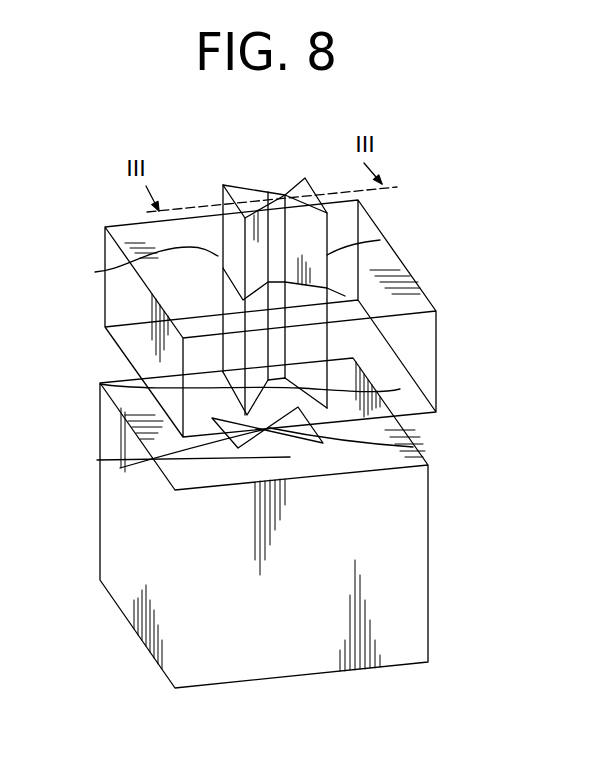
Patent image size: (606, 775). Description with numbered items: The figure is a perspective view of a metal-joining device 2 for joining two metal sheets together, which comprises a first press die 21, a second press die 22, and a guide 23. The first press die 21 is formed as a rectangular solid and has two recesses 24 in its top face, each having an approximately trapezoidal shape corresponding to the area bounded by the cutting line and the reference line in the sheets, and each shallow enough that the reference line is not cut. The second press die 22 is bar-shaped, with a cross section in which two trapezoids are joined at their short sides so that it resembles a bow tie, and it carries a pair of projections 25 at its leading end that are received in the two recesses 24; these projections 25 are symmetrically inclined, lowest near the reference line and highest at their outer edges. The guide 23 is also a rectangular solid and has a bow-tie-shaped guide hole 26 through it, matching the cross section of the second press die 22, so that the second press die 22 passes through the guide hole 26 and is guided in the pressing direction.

The metal-joining device 2 is at (488, 228).
The first press die 21 is at (440, 534).
The second press die 22 is at (380, 240).
The guide 23 is at (445, 344).
The recesses 24 is at (97, 460).
The projections 25 is at (98, 385).
The guide hole 26 is at (95, 272).